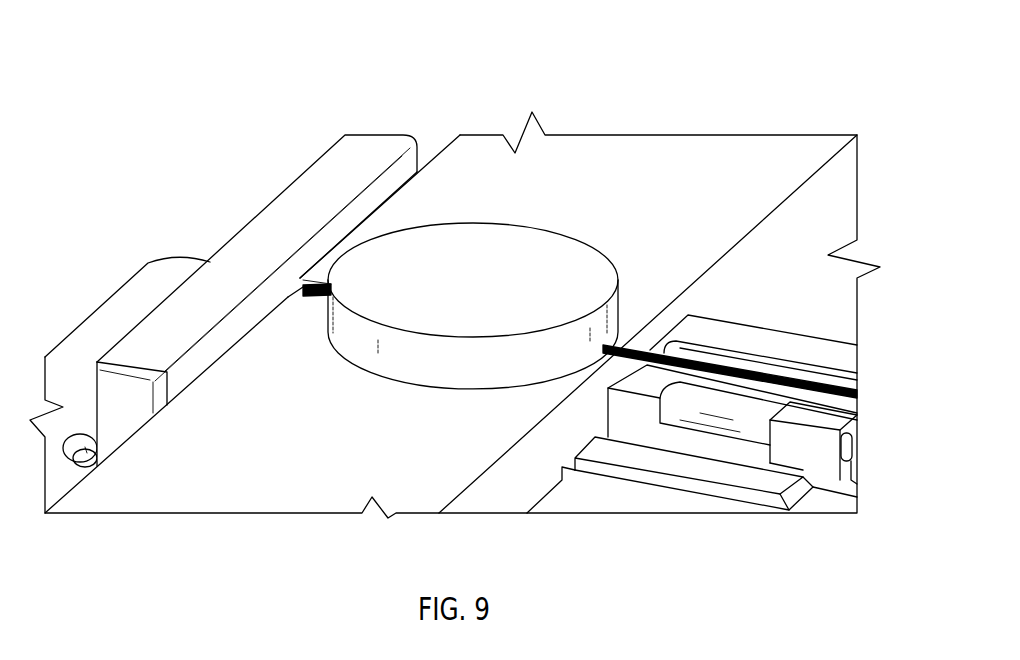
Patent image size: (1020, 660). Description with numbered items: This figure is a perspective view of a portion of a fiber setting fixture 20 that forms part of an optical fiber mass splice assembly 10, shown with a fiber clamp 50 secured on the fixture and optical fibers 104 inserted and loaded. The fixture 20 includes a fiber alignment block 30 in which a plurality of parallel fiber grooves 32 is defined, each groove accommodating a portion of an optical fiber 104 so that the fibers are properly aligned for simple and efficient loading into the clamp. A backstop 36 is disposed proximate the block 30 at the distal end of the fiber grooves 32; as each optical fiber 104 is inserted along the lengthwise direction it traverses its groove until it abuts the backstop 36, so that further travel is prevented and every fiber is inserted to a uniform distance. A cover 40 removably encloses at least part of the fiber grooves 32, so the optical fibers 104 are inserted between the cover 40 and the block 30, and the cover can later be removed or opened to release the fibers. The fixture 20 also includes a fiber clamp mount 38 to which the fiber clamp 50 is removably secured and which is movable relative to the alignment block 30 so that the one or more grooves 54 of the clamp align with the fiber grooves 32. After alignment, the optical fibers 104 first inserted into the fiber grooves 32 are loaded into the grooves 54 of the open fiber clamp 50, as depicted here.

The optical fiber mass splice assembly 10 is at (252, 120).
The fiber setting fixture 20 is at (462, 277).
The fiber alignment block 30 is at (478, 155).
The fiber grooves 32 is at (307, 283).
The backstop 36 is at (373, 132).
The fiber clamp mount 38 is at (827, 512).
The cover 40 is at (438, 365).
The fiber clamp 50 is at (777, 323).
The groove 54 is at (697, 350).
The optical fibers 104 is at (843, 392).